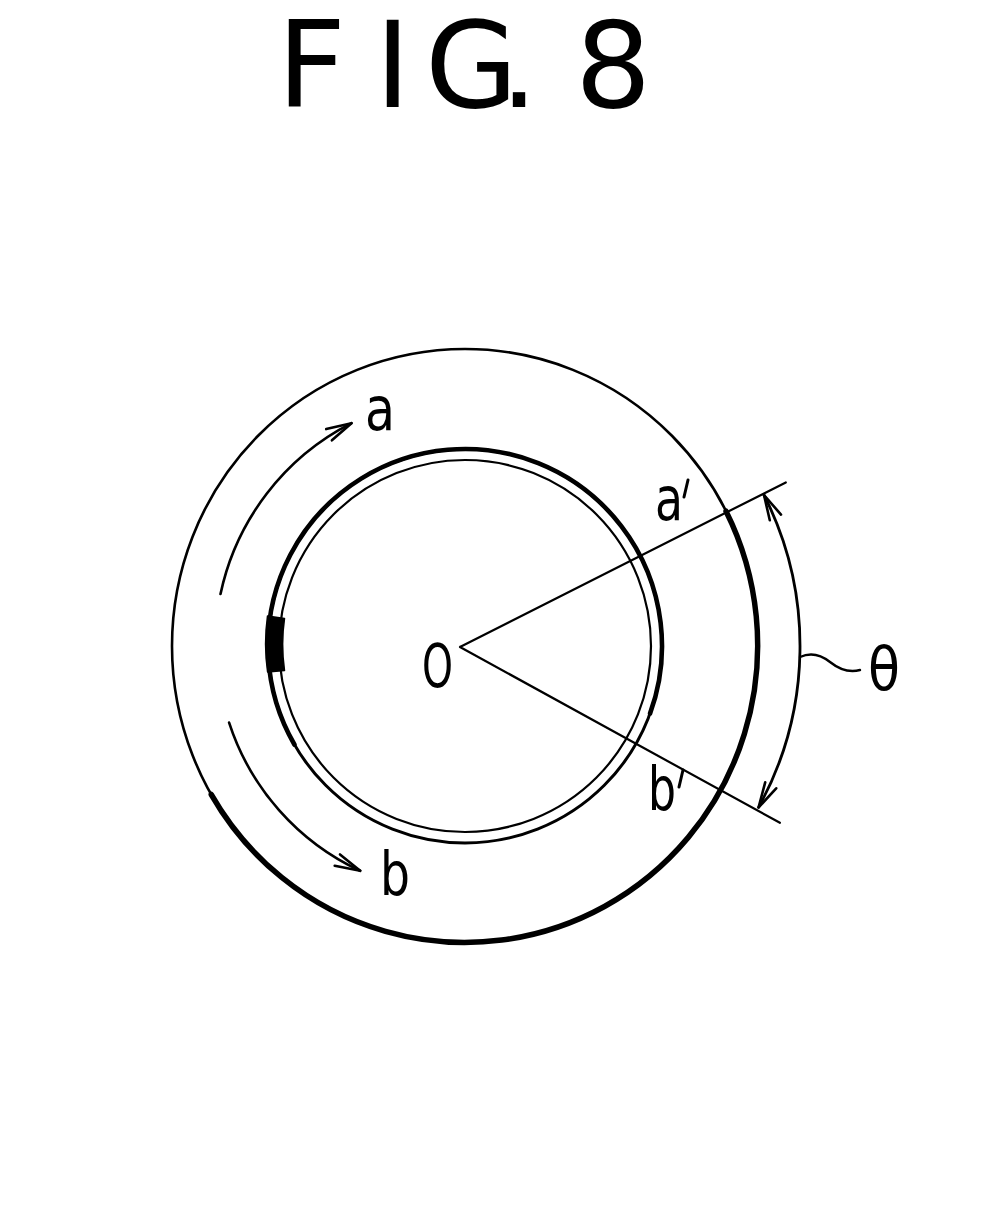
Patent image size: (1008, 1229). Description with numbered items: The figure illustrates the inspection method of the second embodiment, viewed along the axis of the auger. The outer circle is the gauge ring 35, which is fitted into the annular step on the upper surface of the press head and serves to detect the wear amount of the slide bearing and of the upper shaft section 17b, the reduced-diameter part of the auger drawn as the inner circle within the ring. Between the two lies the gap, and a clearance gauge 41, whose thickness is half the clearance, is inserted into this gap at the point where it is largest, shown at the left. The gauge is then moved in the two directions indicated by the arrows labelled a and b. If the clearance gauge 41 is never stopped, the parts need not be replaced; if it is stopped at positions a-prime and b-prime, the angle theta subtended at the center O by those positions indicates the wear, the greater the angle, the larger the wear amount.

The gauge ring 35 is at (563, 400).
The upper shaft section 17b is at (520, 757).
The clearance gauge 41 is at (266, 660).